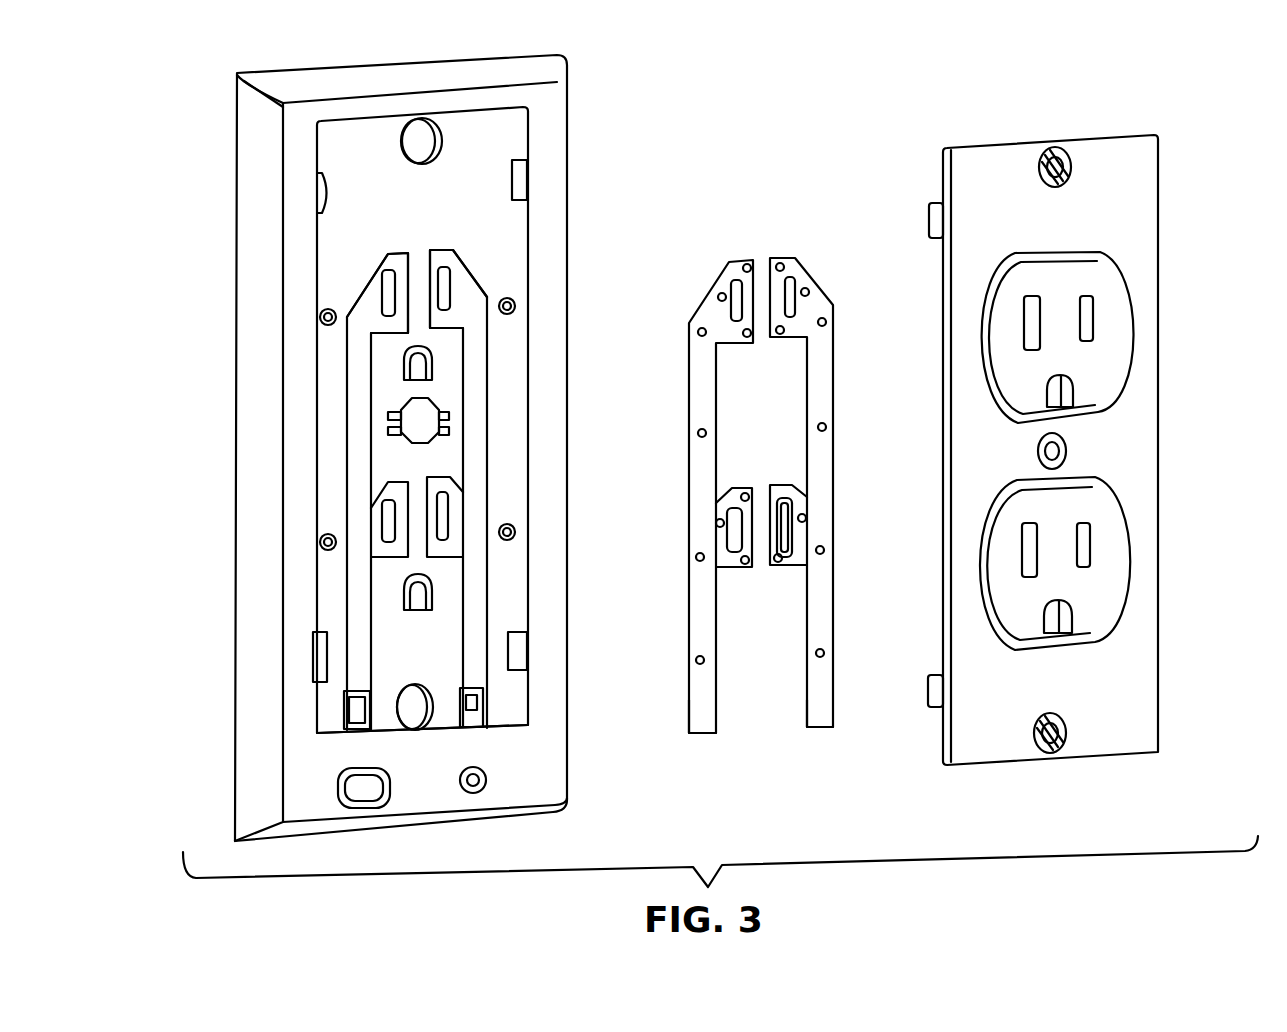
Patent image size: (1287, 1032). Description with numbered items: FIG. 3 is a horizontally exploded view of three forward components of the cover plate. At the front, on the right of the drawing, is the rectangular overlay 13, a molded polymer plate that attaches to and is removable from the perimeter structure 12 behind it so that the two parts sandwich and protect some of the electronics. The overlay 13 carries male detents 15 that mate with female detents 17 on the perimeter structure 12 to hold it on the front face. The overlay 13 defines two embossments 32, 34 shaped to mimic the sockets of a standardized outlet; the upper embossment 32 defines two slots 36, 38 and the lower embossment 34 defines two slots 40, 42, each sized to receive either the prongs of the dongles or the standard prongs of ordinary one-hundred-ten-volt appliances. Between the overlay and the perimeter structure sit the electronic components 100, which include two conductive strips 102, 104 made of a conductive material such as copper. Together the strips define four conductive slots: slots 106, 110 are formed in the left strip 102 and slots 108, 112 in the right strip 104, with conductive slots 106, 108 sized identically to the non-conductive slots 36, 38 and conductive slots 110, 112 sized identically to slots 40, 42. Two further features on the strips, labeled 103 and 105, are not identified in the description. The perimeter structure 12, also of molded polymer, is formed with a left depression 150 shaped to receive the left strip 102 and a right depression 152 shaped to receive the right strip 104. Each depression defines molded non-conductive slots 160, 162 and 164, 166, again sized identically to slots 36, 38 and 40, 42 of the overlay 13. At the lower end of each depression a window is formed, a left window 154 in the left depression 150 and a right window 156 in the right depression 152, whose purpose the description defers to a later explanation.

The perimeter structure 12 is at (560, 128).
The overlay 13 is at (1140, 178).
The male detents 15 is at (929, 214).
The female detents 17 is at (329, 192).
The embossment 32 is at (1100, 370).
The embossment 34 is at (1102, 597).
The slot 36 is at (1017, 297).
The slot 38 is at (1088, 308).
The slot 40 is at (1020, 527).
The slot 42 is at (1088, 540).
The electronic components 100 is at (812, 200).
The left strip 102 is at (728, 273).
The lower end of first bracket 103 is at (702, 723).
The right strip 104 is at (827, 288).
The lower end of second bracket 105 is at (817, 717).
The conductive slot 106 is at (732, 340).
The conductive slot 108 is at (797, 338).
The conductive slot 110 is at (732, 570).
The conductive slot 112 is at (792, 570).
The left depression 150 is at (372, 284).
The right depression 152 is at (457, 258).
The left window 154 is at (357, 703).
The right window 156 is at (528, 726).
The molded non-conductive slot 160 is at (381, 306).
The molded non-conductive slot 162 is at (450, 287).
The molded non-conductive slot 164 is at (380, 548).
The molded non-conductive slot 166 is at (450, 507).